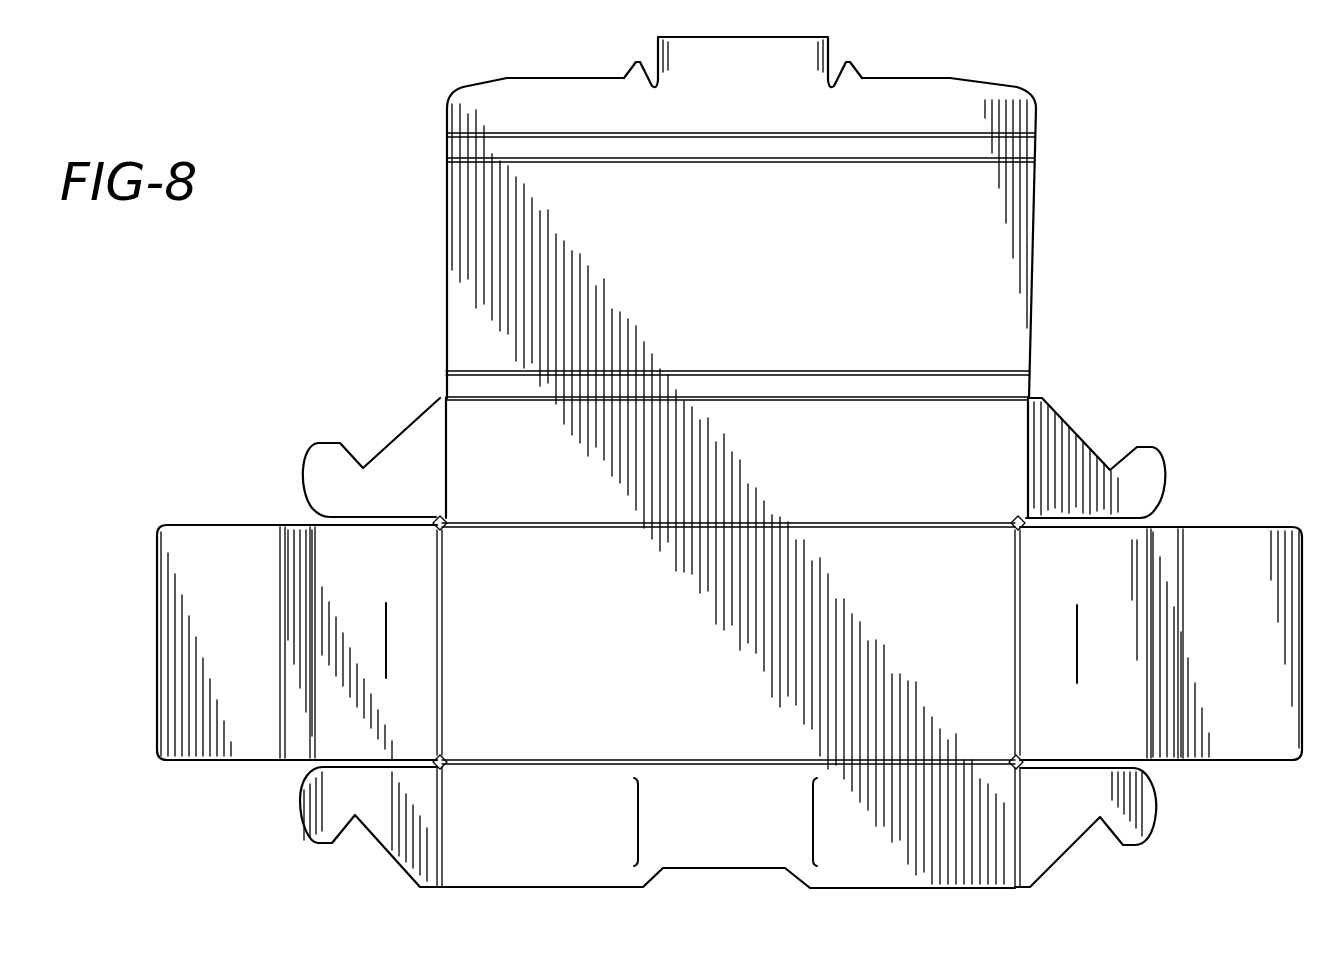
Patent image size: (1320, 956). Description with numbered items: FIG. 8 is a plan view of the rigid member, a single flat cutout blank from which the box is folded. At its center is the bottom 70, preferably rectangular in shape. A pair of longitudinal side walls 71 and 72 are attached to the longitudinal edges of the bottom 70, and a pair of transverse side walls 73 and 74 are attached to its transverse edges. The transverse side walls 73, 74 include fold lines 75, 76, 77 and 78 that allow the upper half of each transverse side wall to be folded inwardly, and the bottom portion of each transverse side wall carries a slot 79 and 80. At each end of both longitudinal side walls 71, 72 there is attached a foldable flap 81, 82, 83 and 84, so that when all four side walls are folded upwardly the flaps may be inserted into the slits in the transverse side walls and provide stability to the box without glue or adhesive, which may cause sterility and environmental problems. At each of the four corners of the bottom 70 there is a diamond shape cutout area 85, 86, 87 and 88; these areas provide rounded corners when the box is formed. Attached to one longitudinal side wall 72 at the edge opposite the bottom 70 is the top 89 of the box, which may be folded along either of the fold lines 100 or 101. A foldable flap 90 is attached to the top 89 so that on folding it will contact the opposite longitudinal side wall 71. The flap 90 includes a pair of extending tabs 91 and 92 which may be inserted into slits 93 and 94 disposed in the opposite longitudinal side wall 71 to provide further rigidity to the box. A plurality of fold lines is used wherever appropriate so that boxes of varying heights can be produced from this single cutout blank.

The bottom 70 is at (726, 698).
The longitudinal side wall 71 is at (733, 816).
The longitudinal side wall 72 is at (750, 443).
The transverse side wall 73 is at (1260, 641).
The transverse side wall 74 is at (236, 630).
The fold line 75 is at (310, 733).
The fold line 76 is at (280, 705).
The fold line 77 is at (1150, 560).
The fold line 78 is at (1183, 573).
The slot 79 is at (1075, 650).
The slot 80 is at (388, 645).
The foldable flap 81 is at (1130, 800).
The foldable flap 82 is at (1145, 470).
The foldable flap 83 is at (334, 797).
The foldable flap 84 is at (321, 467).
The diamond shape cutout area 85 is at (1018, 758).
The diamond shape cutout area 86 is at (1017, 528).
The diamond shape cutout area 87 is at (445, 528).
The diamond shape cutout area 88 is at (442, 758).
The top 89 is at (750, 275).
The foldable flap 90 is at (757, 79).
The extending tab 91 is at (647, 74).
The extending tab 92 is at (838, 74).
The slit 93 is at (815, 820).
The slit 94 is at (637, 818).
The fold line 100 is at (988, 398).
The fold line 101 is at (950, 372).